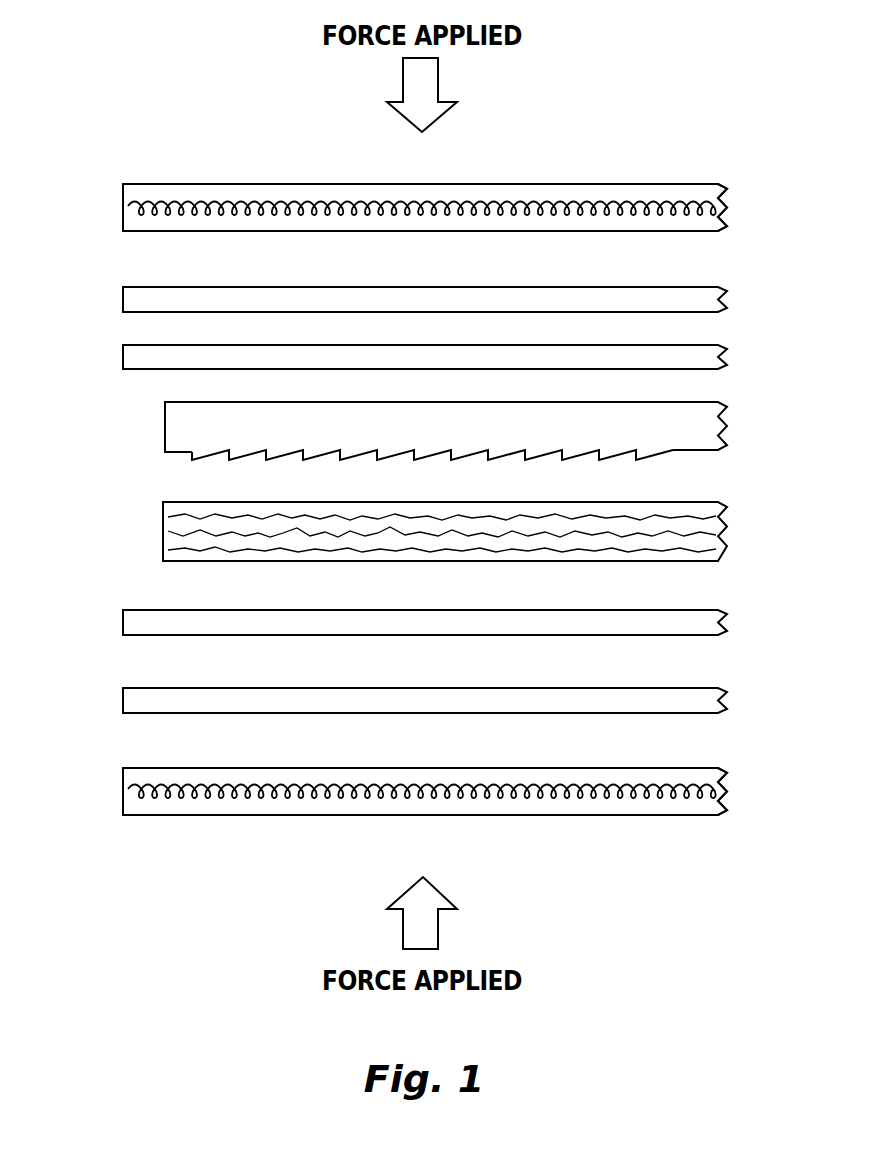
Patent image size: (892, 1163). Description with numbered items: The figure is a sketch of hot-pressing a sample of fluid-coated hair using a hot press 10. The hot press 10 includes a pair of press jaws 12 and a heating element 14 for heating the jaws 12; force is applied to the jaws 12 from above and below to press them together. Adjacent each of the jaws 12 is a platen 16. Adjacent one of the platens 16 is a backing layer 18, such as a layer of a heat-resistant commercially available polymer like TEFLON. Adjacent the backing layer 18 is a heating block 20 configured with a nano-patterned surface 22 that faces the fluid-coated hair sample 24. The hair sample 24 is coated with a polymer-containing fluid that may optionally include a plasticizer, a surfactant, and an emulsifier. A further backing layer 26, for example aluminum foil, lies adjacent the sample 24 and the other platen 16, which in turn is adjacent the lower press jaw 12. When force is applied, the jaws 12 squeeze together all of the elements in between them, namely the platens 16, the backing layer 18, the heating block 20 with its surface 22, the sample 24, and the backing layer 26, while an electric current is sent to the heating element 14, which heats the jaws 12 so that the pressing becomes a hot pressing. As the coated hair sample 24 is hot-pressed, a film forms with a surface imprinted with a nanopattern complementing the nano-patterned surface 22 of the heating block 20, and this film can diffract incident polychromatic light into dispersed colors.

The hot press 10 is at (134, 862).
The press jaws 12 is at (203, 184).
The heating element 14 is at (644, 202).
The platen 16 is at (123, 297).
The backing layer 18 is at (123, 355).
The heating block 20 is at (165, 430).
The nano-patterned surface 22 is at (200, 462).
The fluid-coated hair sample 24 is at (163, 540).
The backing layer 26 is at (123, 620).